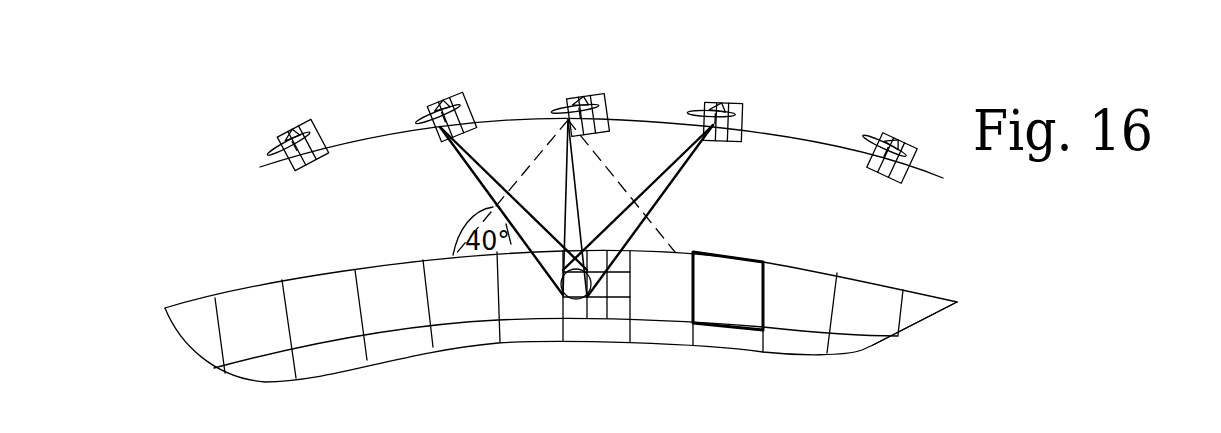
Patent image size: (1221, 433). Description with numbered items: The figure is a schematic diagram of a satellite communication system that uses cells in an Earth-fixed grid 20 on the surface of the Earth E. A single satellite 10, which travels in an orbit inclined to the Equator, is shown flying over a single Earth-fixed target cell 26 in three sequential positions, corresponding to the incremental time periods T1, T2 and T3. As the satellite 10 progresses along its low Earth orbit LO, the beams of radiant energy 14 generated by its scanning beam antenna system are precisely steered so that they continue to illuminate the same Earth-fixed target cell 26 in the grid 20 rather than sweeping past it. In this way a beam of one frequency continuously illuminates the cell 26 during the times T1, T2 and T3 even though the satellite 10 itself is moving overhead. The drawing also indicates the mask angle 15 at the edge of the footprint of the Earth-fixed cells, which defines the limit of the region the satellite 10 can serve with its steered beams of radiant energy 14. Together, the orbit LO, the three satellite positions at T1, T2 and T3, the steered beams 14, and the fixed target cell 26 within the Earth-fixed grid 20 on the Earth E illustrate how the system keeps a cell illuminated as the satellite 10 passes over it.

The satellite 10 is at (601, 106).
The radiant energy 14 is at (489, 194).
The mask angle 15 is at (609, 167).
The Earth-fixed grid 20 is at (336, 250).
The target cell 26 is at (577, 299).
The incremental time period T1 is at (714, 103).
The incremental time period T2 is at (580, 100).
The incremental time period T3 is at (439, 106).
The Low Earth Orbit LO is at (805, 136).
The Earth E is at (923, 290).